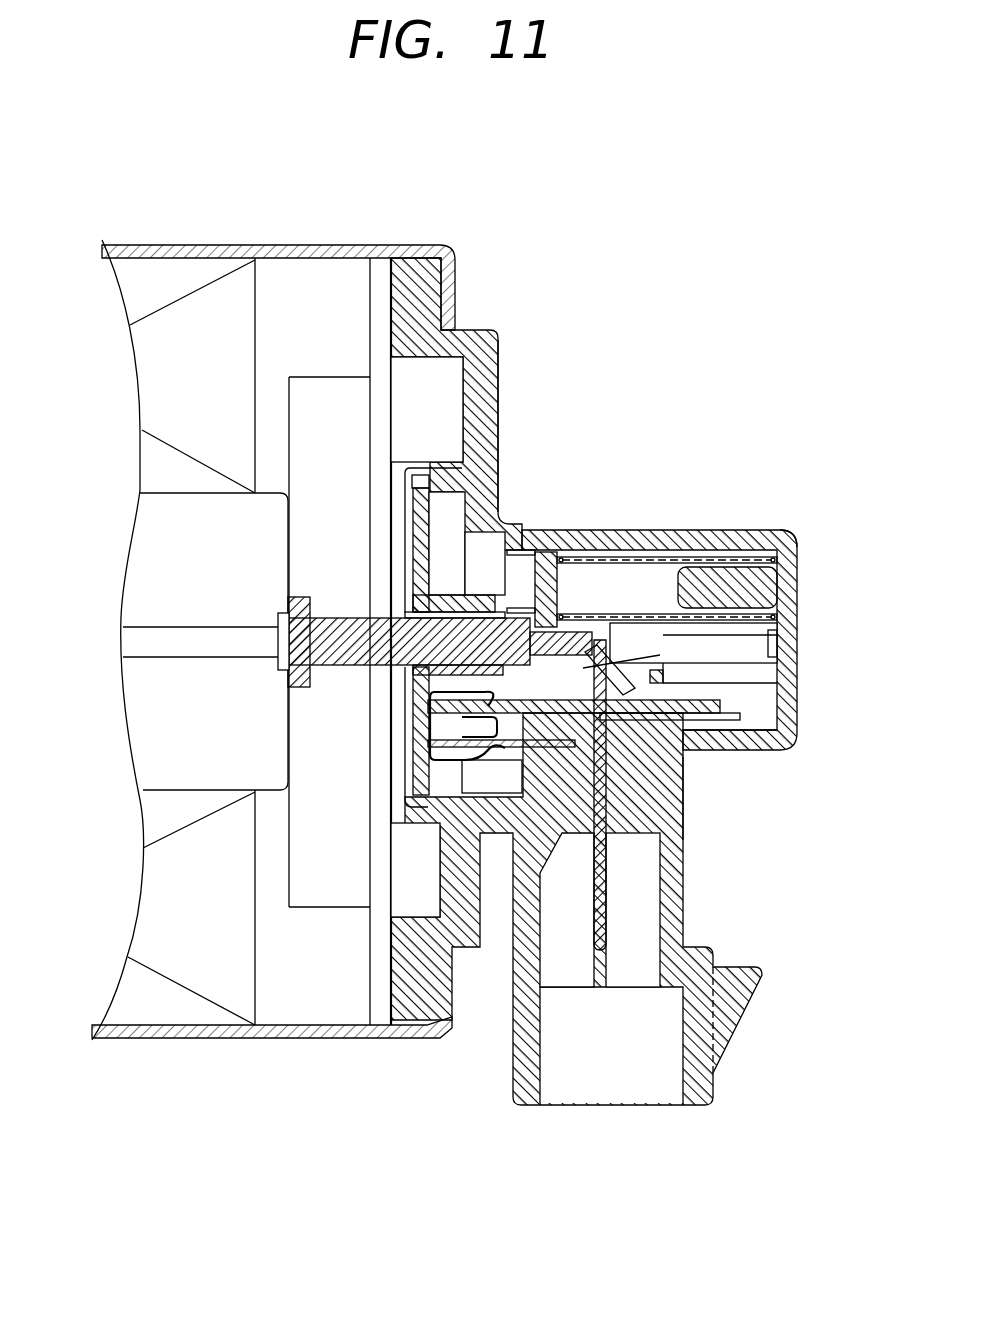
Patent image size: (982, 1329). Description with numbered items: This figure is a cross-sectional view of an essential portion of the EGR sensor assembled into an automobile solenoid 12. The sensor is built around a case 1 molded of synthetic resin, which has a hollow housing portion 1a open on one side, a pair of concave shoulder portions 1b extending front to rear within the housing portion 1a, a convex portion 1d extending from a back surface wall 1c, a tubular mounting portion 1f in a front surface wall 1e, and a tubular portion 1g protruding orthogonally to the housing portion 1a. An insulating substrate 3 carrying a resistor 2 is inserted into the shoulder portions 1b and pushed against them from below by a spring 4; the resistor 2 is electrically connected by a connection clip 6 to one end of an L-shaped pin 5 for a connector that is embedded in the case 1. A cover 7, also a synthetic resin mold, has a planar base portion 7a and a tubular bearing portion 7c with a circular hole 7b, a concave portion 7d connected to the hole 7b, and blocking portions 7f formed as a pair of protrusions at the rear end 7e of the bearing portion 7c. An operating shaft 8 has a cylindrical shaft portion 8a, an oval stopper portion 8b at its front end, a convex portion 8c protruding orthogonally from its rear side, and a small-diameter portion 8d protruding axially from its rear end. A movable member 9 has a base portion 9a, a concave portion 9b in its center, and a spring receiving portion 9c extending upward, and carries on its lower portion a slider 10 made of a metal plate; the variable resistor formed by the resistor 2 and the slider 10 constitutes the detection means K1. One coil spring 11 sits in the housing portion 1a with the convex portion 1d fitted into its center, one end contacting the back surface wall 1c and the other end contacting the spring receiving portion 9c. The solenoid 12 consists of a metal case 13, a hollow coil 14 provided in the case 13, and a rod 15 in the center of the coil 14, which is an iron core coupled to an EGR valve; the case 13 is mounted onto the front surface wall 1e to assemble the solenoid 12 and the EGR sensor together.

The case 1 is at (503, 348).
The housing portion 1a is at (748, 643).
The shoulder portions 1b is at (757, 703).
The back surface wall 1c is at (797, 550).
The convex portion 1d is at (740, 575).
The front surface wall 1e is at (490, 377).
The tubular mounting portion 1f is at (447, 462).
The tubular portion 1g is at (683, 918).
The resistor 2 is at (720, 748).
The insulating substrate 3 is at (683, 757).
The spring 4 is at (743, 748).
The L-shaped pin 5 is at (600, 952).
The connection clip 6 is at (440, 790).
The cover 7 is at (412, 540).
The base portion 7a is at (403, 510).
The circular hole 7b is at (400, 668).
The tubular bearing portion 7c is at (468, 548).
The concave portion 7d is at (413, 622).
The rear end 7e is at (512, 552).
The blocking portions 7f is at (560, 635).
The operating shaft 8 is at (280, 690).
The cylindrical shaft portion 8a is at (315, 698).
The oval stopper portion 8b is at (290, 608).
The convex portion 8c is at (495, 745).
The small-diameter portion 8d is at (626, 636).
The movable member 9 is at (680, 558).
The base portion 9a is at (777, 640).
The concave portion 9b is at (648, 640).
The spring receiving portion 9c is at (645, 668).
The slider 10 is at (680, 803).
The coil spring 11 is at (780, 535).
The solenoid 12 is at (152, 243).
The metal case 13 is at (330, 245).
The hollow coil 14 is at (140, 385).
The rod 15 is at (125, 636).
The detection means K1 is at (668, 690).